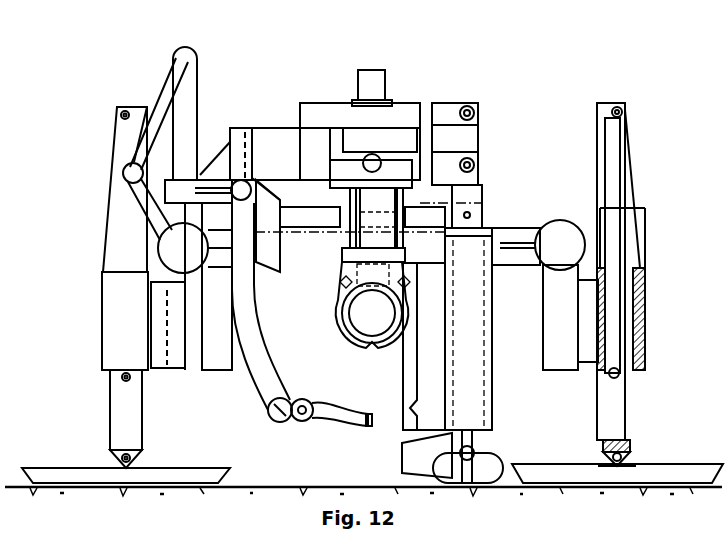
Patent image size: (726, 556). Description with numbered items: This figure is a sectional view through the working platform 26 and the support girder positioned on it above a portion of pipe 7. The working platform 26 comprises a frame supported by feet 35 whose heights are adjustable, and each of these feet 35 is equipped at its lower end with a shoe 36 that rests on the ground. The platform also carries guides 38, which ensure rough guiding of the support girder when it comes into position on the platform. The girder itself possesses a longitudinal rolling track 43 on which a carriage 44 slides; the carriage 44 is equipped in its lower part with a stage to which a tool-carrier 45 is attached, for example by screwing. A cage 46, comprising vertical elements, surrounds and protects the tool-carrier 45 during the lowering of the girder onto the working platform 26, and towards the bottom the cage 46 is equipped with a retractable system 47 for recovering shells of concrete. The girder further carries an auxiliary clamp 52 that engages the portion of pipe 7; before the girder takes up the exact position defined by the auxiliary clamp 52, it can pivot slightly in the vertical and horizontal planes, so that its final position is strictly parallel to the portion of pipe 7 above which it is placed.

The portion of pipe 7 is at (368, 330).
The working platform 26 is at (530, 228).
The feet 35 is at (108, 310).
The shoes 36 is at (70, 468).
The guides 38 is at (180, 53).
The longitudinal rolling track 43 is at (362, 160).
The carriage 44 is at (372, 180).
The tool-carrier 45 is at (362, 242).
The cage 46 is at (236, 348).
The retractable system for recovering shells of concrete 47 is at (348, 420).
The auxiliary clamp 52 is at (343, 302).